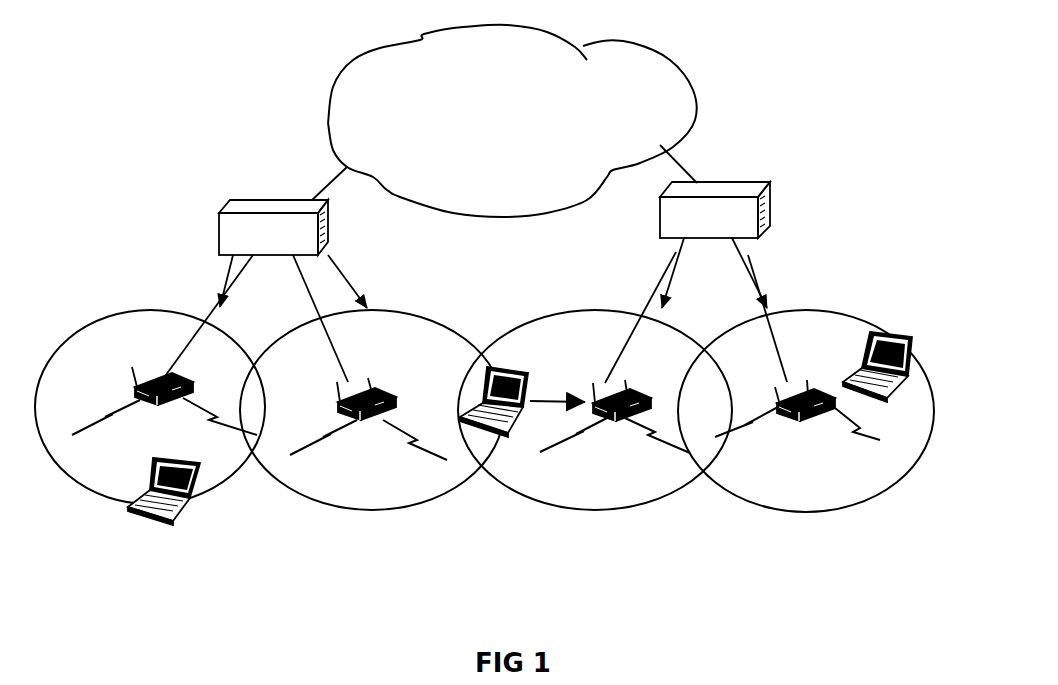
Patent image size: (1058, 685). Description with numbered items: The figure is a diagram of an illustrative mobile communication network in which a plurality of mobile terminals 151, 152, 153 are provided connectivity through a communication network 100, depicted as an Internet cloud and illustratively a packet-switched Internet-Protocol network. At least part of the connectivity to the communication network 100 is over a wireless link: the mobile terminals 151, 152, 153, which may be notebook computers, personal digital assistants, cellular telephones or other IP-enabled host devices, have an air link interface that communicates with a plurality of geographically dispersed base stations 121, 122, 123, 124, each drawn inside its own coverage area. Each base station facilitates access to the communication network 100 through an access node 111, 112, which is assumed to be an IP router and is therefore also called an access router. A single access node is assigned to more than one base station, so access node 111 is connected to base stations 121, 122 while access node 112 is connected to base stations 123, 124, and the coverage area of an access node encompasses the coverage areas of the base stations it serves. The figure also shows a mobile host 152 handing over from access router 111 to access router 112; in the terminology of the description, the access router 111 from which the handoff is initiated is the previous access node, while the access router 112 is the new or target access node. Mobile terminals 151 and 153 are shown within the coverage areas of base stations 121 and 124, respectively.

The communication network 100 is at (512, 121).
The access node 111 is at (257, 200).
The access node 112 is at (733, 182).
The base station 121 is at (165, 380).
The base station 122 is at (366, 391).
The base station 123 is at (605, 400).
The base station 124 is at (807, 395).
The mobile terminal 151 is at (183, 490).
The mobile terminal 152 is at (515, 400).
The mobile terminal 153 is at (897, 345).